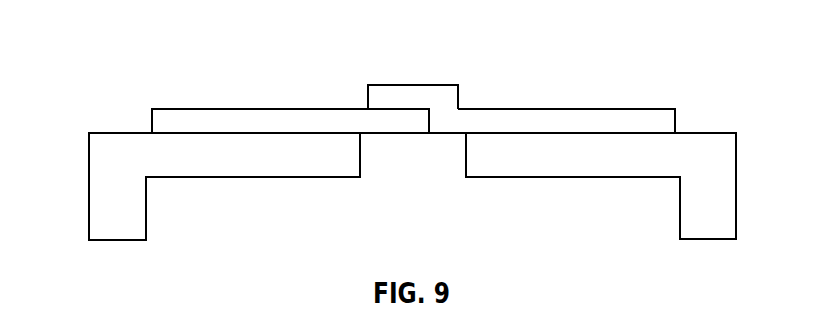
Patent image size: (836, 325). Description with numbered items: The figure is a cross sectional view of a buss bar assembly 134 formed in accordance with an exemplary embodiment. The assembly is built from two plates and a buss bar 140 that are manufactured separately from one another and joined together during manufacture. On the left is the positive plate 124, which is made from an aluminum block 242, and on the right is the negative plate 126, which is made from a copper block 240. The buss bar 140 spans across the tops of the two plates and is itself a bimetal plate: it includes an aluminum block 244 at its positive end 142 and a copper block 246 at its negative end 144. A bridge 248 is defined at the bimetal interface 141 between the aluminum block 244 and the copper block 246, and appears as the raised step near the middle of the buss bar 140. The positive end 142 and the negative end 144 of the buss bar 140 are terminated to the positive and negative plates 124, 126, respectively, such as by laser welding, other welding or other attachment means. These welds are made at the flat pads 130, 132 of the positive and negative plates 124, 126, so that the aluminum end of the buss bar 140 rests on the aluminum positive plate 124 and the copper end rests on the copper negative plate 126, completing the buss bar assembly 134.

The positive plate 124 is at (95, 148).
The negative plate 126 is at (725, 155).
The flat pad 130 is at (112, 132).
The flat pad 132 is at (712, 132).
The buss bar assembly 134 is at (680, 47).
The buss bar 140 is at (495, 87).
The bimetal interface 141 is at (407, 110).
The positive end 142 is at (172, 115).
The negative end 144 is at (642, 115).
The copper block 240 is at (603, 165).
The aluminum block 242 is at (260, 168).
The aluminum block 244 is at (288, 115).
The copper block 246 is at (553, 115).
The bridge 248 is at (407, 92).